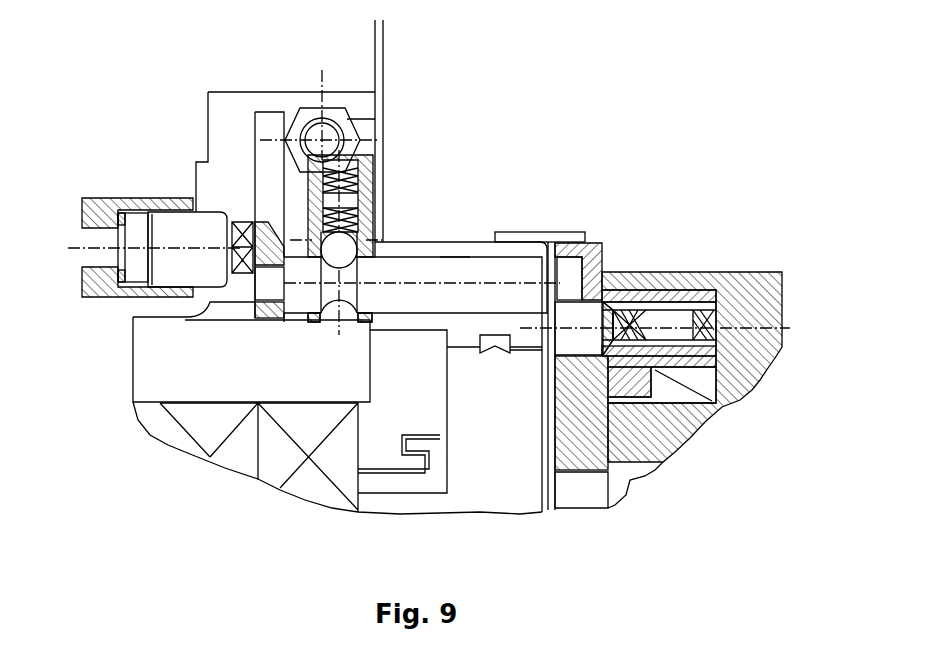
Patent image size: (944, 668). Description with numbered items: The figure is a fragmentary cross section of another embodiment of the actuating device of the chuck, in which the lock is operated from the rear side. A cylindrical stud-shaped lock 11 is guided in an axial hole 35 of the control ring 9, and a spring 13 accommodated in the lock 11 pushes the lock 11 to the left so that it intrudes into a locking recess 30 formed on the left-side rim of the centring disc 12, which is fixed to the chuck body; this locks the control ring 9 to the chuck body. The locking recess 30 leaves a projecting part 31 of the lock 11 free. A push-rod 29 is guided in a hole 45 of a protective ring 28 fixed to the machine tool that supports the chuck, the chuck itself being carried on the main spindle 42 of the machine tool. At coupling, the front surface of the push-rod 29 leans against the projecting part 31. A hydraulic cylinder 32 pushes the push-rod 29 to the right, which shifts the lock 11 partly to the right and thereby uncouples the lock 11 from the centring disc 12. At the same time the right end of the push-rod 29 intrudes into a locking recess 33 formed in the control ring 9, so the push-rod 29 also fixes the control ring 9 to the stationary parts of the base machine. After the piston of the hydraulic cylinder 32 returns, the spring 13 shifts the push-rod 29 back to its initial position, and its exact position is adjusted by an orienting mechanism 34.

The control ring 9 is at (637, 380).
The lock 11 is at (596, 308).
The centring disc 12 is at (582, 467).
The spring 13 is at (720, 272).
The protective ring 28 is at (410, 247).
The push-rod 29 is at (505, 273).
The locking recess 30 is at (703, 405).
The projecting part 31 is at (592, 282).
The hydraulic cylinder 32 is at (160, 222).
The locking recess 33 is at (572, 265).
The orienting mechanism 34 is at (375, 226).
The axial hole 35 is at (640, 310).
The main spindle 42 is at (512, 493).
The hole 45 is at (445, 257).